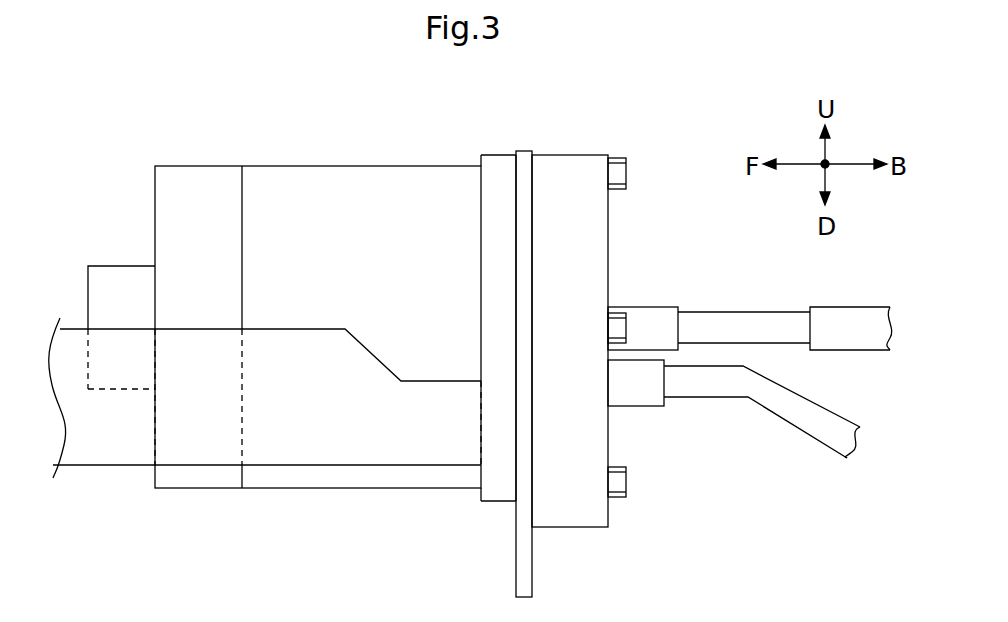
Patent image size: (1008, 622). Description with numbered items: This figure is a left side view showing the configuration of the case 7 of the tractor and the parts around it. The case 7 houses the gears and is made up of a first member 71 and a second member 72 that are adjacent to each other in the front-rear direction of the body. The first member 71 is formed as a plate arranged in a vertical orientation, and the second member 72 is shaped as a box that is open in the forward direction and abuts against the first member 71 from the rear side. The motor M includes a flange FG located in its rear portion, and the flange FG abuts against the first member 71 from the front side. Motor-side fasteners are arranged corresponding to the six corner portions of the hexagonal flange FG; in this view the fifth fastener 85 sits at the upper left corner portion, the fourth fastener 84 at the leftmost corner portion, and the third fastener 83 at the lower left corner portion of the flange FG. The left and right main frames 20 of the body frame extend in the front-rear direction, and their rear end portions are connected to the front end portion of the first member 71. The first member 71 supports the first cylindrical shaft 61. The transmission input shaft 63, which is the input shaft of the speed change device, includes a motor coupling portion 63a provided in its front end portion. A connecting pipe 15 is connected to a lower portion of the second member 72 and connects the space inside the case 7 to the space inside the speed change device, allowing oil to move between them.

The motor M is at (293, 180).
The flange FG is at (500, 168).
The case 7 is at (533, 321).
The first member 71 is at (516, 550).
The second member 72 is at (575, 515).
The fifth fastener 85 is at (620, 173).
The fourth fastener 84 is at (627, 322).
The third fastener 83 is at (626, 482).
The first cylindrical shaft 61 is at (660, 312).
The motor coupling portion 63a is at (743, 322).
The transmission input shaft 63 is at (852, 320).
The connecting pipe 15 is at (702, 388).
The main frame 20 is at (120, 455).